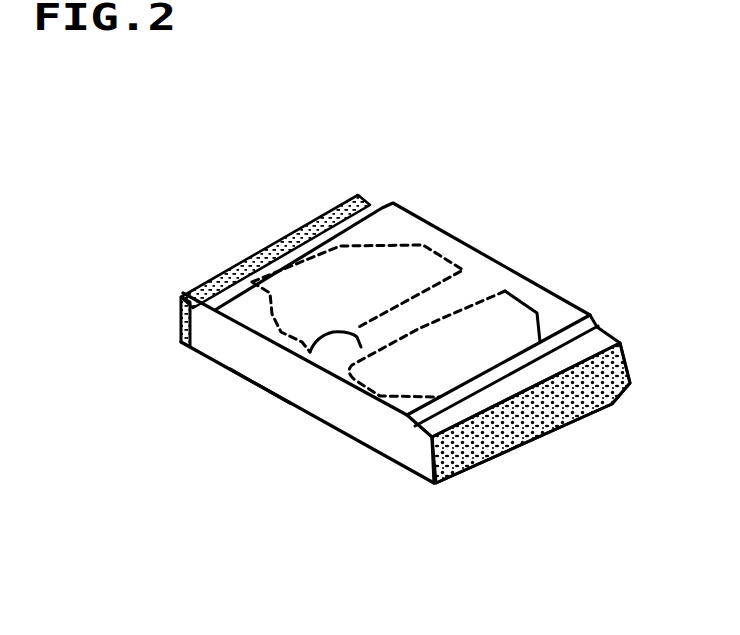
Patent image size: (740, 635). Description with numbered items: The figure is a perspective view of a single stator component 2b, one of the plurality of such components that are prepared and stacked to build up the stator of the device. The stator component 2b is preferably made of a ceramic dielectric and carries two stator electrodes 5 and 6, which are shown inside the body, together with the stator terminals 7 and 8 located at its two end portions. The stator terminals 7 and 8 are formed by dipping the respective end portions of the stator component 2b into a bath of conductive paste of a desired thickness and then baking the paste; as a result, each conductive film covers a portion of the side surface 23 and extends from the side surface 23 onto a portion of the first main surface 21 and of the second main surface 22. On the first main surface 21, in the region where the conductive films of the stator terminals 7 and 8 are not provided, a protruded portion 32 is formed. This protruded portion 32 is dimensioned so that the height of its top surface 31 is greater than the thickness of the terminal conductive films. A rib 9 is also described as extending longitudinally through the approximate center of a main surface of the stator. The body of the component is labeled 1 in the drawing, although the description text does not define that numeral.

The stator component 2b is at (389, 97).
The substrate 1 is at (386, 315).
The stator electrode 5 is at (423, 245).
The stator electrode 6 is at (505, 291).
The stator terminal 7 is at (181, 323).
The stator terminal 8 is at (543, 447).
The rib 9 is at (580, 428).
The first main surface 21 is at (598, 326).
The second main surface 22 is at (342, 429).
The side surface 23 is at (223, 340).
The top surface 31 is at (263, 378).
The protruded portion 32 is at (403, 420).